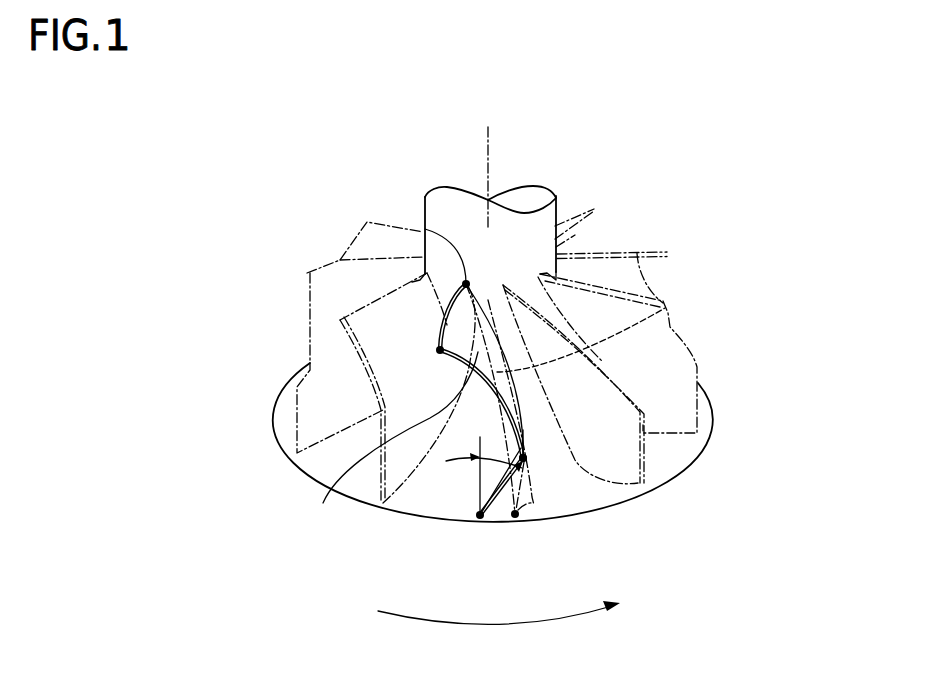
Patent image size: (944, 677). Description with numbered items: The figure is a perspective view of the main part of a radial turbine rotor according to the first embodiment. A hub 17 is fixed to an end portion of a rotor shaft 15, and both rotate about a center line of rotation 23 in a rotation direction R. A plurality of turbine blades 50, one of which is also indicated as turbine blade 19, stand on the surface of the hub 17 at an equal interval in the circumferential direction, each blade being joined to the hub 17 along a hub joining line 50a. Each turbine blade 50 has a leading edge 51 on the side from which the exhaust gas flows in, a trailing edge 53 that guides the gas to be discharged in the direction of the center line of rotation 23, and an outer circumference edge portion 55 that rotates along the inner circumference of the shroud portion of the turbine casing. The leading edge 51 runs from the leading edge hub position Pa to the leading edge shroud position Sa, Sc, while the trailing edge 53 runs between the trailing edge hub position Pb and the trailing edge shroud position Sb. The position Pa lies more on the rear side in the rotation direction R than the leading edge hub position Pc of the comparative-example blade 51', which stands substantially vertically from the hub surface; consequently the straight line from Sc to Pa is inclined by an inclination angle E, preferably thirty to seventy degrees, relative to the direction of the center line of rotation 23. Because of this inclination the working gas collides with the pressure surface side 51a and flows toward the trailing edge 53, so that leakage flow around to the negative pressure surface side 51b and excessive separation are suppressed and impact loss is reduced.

The rotor shaft 15 is at (542, 224).
The hub 17 is at (668, 457).
The turbine blade 19 is at (639, 250).
The center line of rotation 23 is at (488, 152).
The turbine blade 50 is at (442, 352).
The hub joining line 50a is at (668, 313).
The leading edge 51 is at (481, 436).
The turbine blade of comparative example 51' is at (495, 425).
The pressure surface side 51a is at (524, 456).
The negative pressure surface side 51b is at (510, 393).
The trailing edge 53 is at (447, 350).
The outer circumference edge portion 55 is at (393, 445).
The inclination angle of leading edge E is at (484, 474).
The rotation direction of turbine blade R is at (501, 629).
The leading edge hub position Pa is at (478, 518).
The trailing edge hub position Pb is at (425, 230).
The leading edge hub position of comparative example Pc is at (516, 518).
The trailing edge shroud position Sb is at (440, 350).
The leading edge shroud position Sa is at (524, 462).
The leading edge shroud position Sc is at (523, 458).